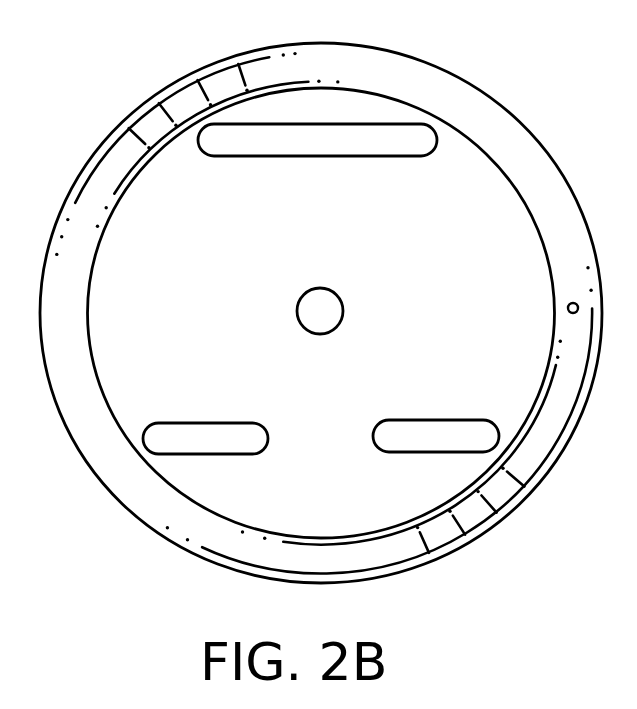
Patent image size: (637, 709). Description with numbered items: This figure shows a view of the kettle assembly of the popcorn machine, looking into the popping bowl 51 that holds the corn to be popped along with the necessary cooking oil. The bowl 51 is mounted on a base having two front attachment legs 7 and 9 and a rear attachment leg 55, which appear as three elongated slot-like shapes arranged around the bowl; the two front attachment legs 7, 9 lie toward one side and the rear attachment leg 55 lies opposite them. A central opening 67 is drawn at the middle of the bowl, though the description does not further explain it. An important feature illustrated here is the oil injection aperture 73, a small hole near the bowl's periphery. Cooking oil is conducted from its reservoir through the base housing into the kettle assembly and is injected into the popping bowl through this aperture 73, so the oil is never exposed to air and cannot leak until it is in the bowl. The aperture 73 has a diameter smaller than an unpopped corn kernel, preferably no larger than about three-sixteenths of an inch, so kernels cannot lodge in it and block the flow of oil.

The bowl 51 is at (137, 113).
The rear attachment leg 55 is at (303, 142).
The central hole 67 is at (307, 307).
The oil injection aperture 73 is at (568, 308).
The front attachment leg 9 is at (203, 422).
The front attachment leg 7 is at (422, 420).